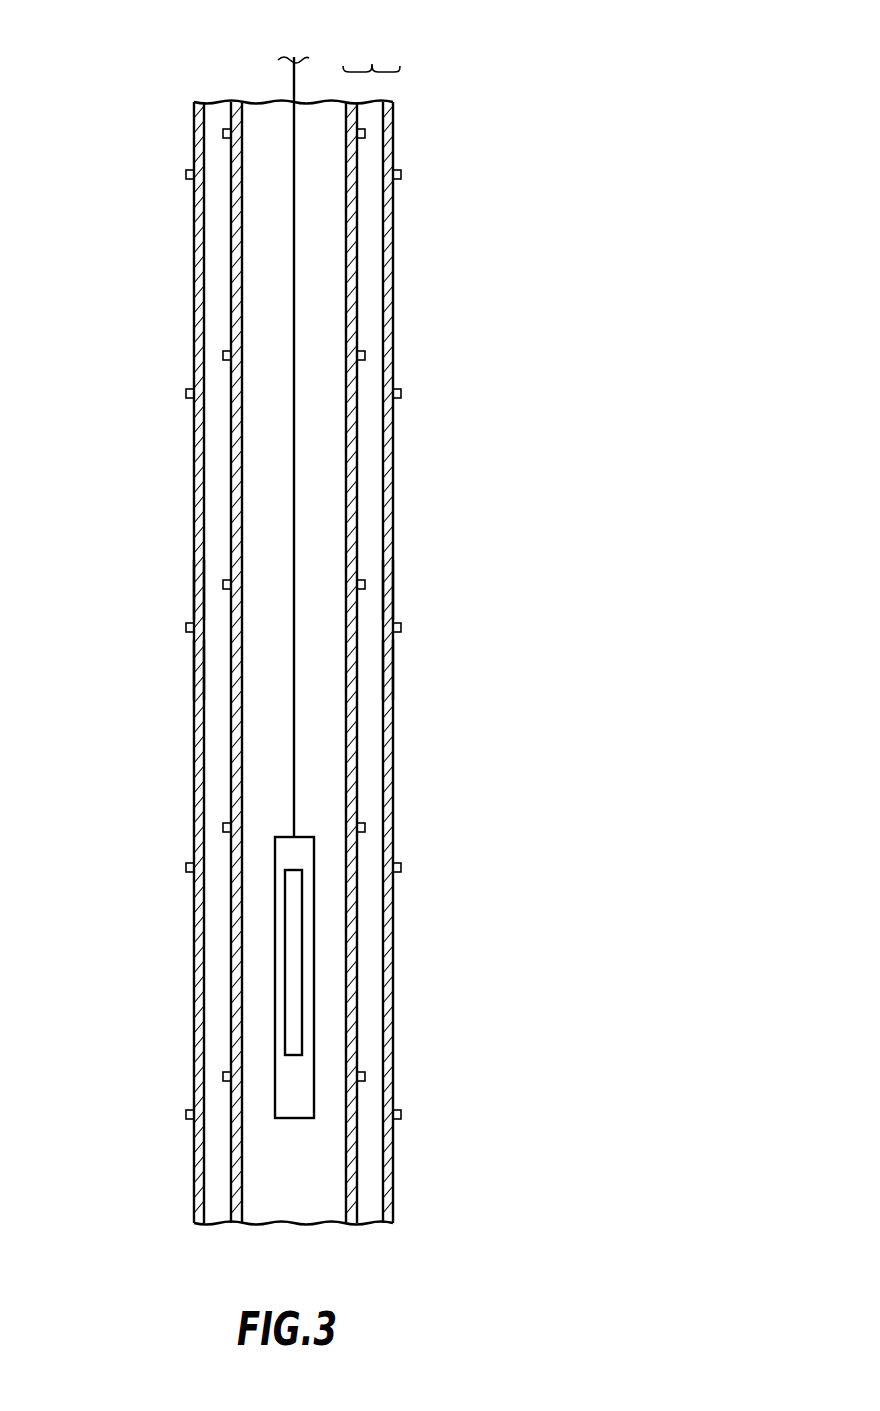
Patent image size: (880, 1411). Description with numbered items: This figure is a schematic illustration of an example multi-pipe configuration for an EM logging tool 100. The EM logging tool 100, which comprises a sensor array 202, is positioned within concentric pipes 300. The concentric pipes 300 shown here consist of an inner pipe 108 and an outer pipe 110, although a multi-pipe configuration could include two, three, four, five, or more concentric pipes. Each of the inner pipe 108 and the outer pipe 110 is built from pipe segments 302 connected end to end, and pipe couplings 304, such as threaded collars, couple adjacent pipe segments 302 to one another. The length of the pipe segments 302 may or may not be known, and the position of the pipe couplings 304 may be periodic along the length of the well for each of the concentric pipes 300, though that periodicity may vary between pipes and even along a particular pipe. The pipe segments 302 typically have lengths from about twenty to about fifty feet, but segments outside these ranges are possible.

The EM logging tool 100 is at (292, 1118).
The inner pipe 108 is at (241, 117).
The outer pipe 110 is at (194, 193).
The sensor array 202 is at (285, 924).
The concentric pipes 300 is at (372, 64).
The pipe segments 302 is at (194, 580).
The pipe couplings 304 is at (186, 627).